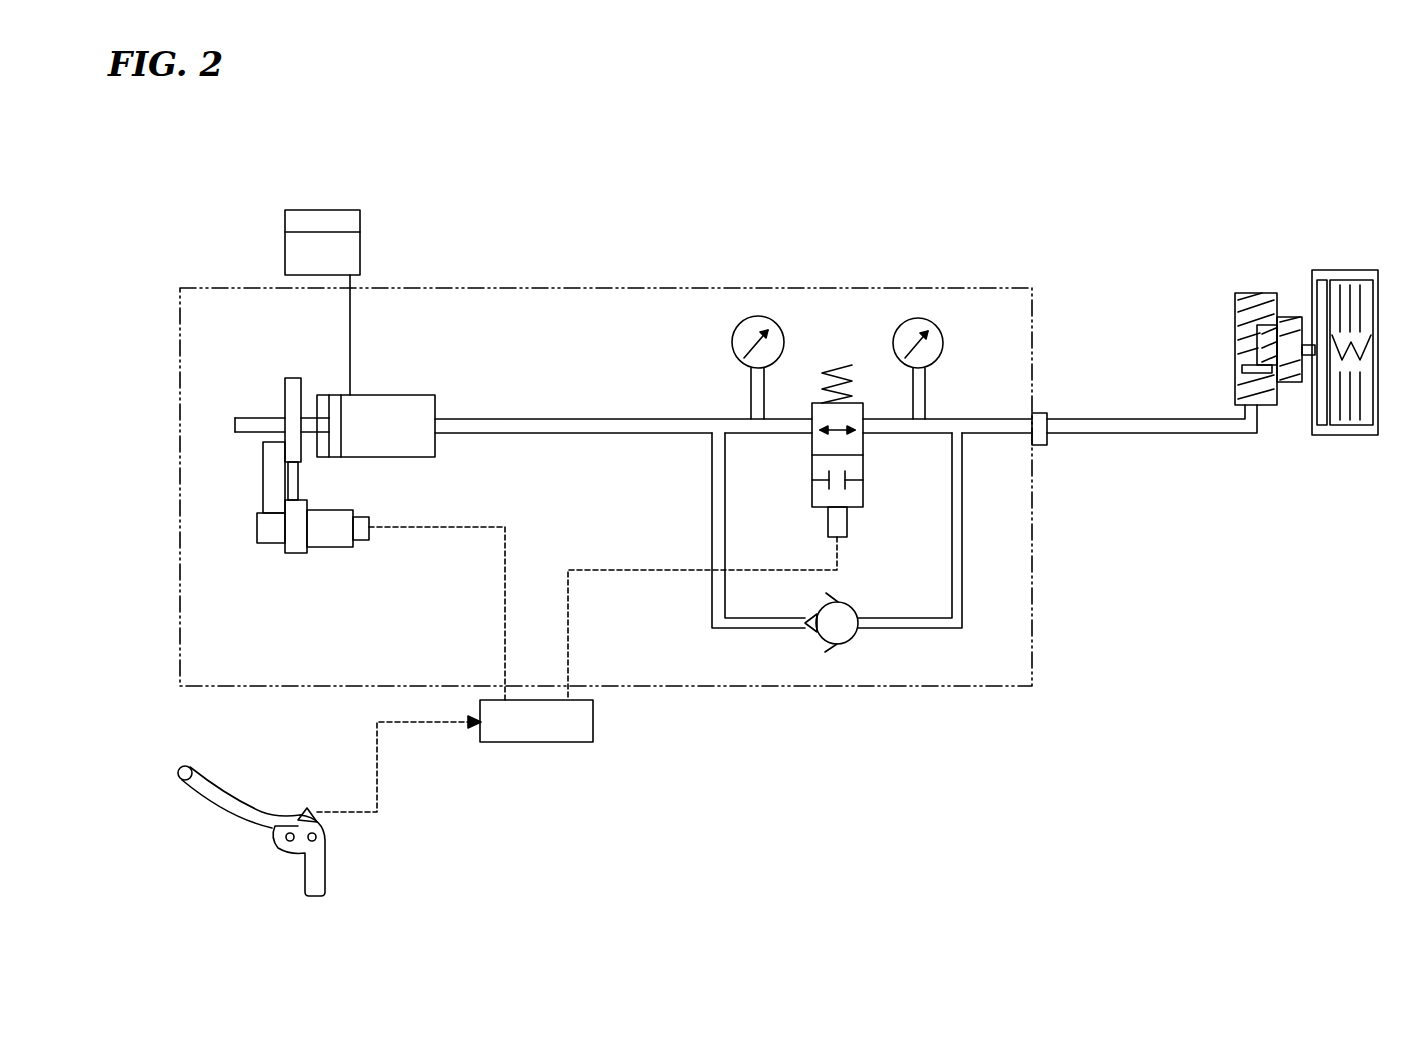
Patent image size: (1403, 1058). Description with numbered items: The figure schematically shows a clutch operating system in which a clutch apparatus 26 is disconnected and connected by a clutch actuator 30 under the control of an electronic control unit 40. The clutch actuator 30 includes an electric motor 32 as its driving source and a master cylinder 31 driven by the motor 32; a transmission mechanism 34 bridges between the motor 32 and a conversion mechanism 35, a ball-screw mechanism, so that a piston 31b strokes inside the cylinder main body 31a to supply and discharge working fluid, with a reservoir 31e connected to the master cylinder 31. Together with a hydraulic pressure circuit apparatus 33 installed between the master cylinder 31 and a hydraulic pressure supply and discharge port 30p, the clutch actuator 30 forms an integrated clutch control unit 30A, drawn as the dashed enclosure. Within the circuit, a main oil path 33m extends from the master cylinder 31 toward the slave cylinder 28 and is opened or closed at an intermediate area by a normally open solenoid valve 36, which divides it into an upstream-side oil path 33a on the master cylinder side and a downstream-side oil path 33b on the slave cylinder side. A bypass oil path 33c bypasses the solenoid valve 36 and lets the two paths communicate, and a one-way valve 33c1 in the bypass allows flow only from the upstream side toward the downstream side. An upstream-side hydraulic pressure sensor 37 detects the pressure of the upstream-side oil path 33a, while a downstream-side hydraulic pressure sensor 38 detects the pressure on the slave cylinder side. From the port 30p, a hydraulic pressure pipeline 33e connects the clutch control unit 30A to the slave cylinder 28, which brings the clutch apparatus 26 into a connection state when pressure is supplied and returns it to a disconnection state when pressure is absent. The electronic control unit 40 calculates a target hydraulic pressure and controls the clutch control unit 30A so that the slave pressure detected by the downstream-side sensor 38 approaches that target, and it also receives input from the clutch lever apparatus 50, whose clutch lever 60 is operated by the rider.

The clutch apparatus 26 is at (1366, 255).
The slave cylinder 28 is at (1246, 272).
The clutch actuator 30 is at (250, 320).
The clutch control unit 30A is at (460, 282).
The hydraulic pressure supply and discharge port 30p is at (1042, 448).
The master cylinder 31 is at (376, 426).
The cylinder main body 31a is at (400, 395).
The piston 31b is at (337, 442).
The reservoir 31e is at (332, 210).
The electric motor 32 is at (328, 550).
The hydraulic pressure circuit apparatus 33 is at (608, 318).
The upstream-side oil path 33a is at (555, 418).
The downstream-side oil path 33b is at (973, 418).
The bypass oil path 33c is at (927, 630).
The one-way valve 33c1 is at (845, 660).
The hydraulic pressure pipeline 33e is at (1113, 418).
The main oil path 33m is at (734, 374).
The transmission mechanism 34 is at (265, 480).
The conversion mechanism 35 is at (290, 390).
The solenoid valve 36 is at (868, 512).
The upstream-side hydraulic pressure sensor 37 is at (732, 334).
The downstream-side hydraulic pressure sensor 38 is at (893, 334).
The electronic control unit 40 is at (530, 742).
The clutch lever apparatus 50 is at (345, 840).
The clutch lever 60 is at (212, 800).